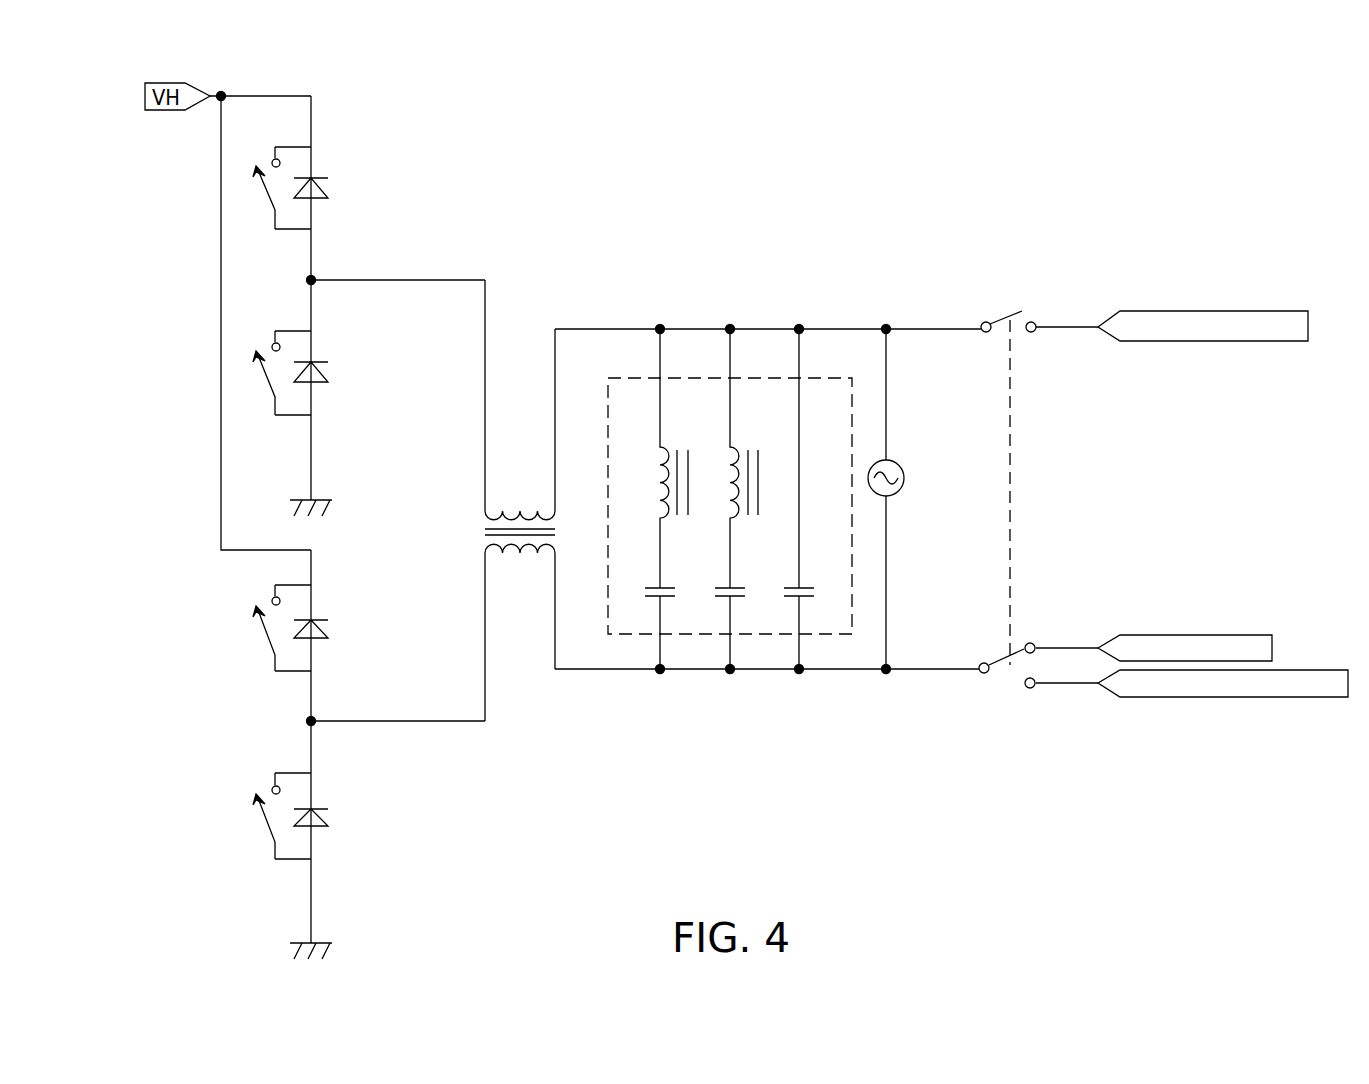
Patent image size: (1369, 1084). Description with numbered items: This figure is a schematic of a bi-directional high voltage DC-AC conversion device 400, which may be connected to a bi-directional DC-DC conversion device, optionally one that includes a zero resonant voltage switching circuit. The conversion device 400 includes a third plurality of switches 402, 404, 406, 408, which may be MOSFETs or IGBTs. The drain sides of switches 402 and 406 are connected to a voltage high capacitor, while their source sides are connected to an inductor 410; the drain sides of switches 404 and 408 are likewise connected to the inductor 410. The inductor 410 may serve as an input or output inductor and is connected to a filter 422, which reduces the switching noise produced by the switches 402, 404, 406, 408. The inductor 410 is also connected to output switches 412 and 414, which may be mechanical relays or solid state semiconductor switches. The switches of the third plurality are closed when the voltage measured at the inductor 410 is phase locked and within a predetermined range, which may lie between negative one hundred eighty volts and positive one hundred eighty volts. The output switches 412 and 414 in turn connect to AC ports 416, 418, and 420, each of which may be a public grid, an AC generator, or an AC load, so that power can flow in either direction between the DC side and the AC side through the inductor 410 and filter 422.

The bi-directional DC-AC conversion device 400 is at (776, 135).
The switch 402 is at (336, 192).
The switch 404 is at (336, 380).
The switch 406 is at (336, 632).
The switch 408 is at (336, 822).
The inductor 410 is at (520, 562).
The output switch 412 is at (1003, 300).
The output switch 414 is at (1003, 705).
The AC port 416 is at (1178, 305).
The AC port 418 is at (1192, 700).
The AC port 420 is at (960, 462).
The filter 422 is at (686, 378).